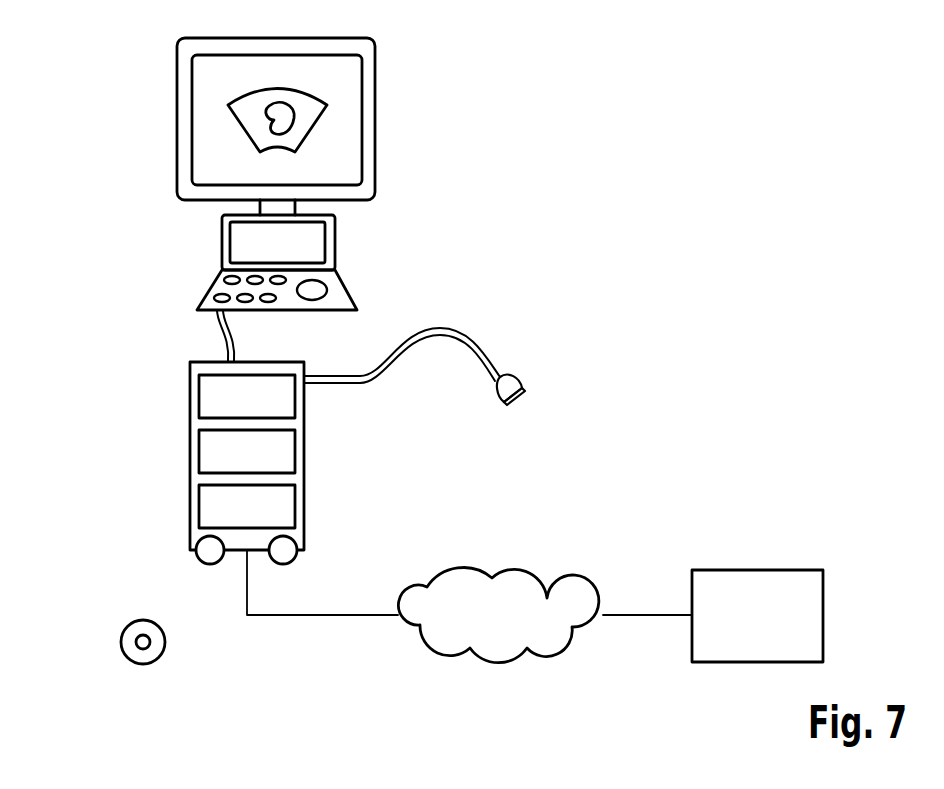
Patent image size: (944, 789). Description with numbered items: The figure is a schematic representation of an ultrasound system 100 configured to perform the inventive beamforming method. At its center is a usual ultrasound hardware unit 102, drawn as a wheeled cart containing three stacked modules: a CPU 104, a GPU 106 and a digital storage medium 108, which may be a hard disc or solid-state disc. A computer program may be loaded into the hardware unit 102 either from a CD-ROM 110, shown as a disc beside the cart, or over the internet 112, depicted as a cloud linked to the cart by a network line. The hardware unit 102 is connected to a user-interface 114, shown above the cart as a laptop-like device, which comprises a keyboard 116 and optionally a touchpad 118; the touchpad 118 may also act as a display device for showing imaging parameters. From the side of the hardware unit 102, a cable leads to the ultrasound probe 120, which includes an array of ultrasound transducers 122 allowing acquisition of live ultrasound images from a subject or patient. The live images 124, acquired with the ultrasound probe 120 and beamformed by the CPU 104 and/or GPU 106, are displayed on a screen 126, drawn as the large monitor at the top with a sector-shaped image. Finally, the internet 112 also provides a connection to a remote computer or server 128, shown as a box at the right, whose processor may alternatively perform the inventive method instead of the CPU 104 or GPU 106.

The ultrasound system 100 is at (448, 54).
The ultrasound hardware unit 102 is at (304, 423).
The CPU 104 is at (190, 393).
The GPU 106 is at (190, 452).
The digital storage medium 108 is at (190, 507).
The CD-ROM 110 is at (121, 641).
The internet 112 is at (467, 568).
The user-interface 114 is at (177, 241).
The keyboard 116 is at (345, 290).
The touchpad 118 is at (335, 233).
The ultrasound probe 120 is at (517, 378).
The array of ultrasound transducers 122 is at (527, 390).
The live images 124 is at (233, 123).
The screen 126 is at (375, 120).
The remote computer or server 128 is at (763, 570).